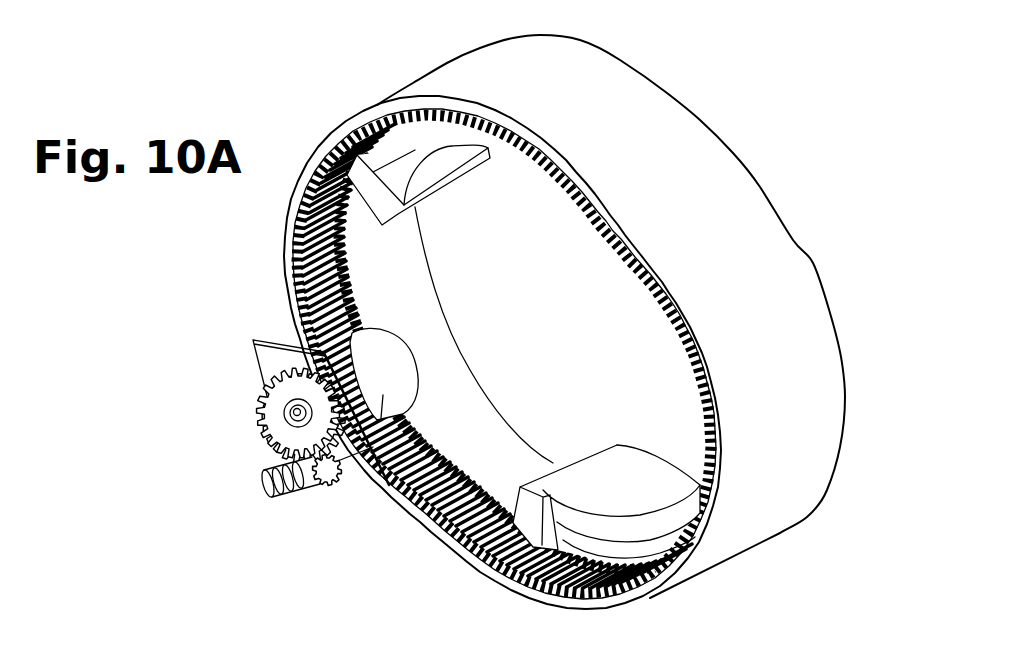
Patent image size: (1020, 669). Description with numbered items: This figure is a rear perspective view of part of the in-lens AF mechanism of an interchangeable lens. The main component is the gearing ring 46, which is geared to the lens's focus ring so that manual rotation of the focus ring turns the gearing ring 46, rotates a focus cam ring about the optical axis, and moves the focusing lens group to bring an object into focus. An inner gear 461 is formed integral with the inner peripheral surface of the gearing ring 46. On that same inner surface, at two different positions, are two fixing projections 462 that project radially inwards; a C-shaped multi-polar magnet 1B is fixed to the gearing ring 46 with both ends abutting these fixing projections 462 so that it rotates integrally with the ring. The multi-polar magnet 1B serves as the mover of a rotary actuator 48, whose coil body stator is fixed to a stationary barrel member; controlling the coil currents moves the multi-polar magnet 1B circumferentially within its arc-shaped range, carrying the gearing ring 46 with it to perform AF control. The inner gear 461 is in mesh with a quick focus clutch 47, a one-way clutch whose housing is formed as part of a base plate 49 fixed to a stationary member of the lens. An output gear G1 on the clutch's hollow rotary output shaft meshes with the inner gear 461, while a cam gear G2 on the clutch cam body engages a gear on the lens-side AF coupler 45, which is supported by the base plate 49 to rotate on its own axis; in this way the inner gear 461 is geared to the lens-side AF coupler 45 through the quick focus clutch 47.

The gearing ring 46 is at (773, 507).
The inner gear 461 is at (510, 571).
The fixing projections 462 is at (440, 197).
The rotary actuator 48 is at (596, 380).
The multi-polar magnet 1B is at (412, 153).
The base plate 49 is at (255, 349).
The quick focus clutch 47 is at (387, 486).
The cam gear G2 is at (268, 411).
The output gear G1 is at (330, 486).
The lens-side AF coupler 45 is at (268, 489).